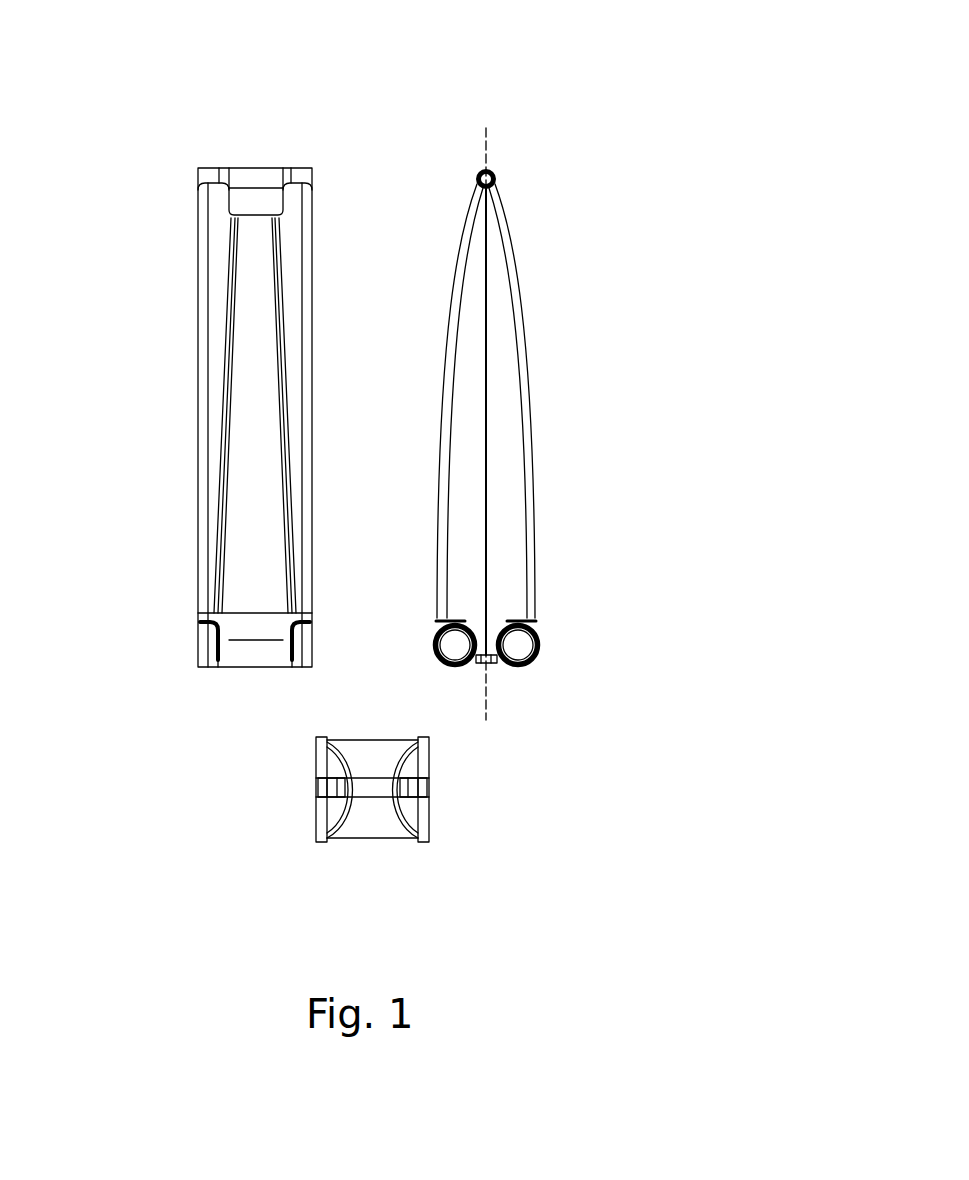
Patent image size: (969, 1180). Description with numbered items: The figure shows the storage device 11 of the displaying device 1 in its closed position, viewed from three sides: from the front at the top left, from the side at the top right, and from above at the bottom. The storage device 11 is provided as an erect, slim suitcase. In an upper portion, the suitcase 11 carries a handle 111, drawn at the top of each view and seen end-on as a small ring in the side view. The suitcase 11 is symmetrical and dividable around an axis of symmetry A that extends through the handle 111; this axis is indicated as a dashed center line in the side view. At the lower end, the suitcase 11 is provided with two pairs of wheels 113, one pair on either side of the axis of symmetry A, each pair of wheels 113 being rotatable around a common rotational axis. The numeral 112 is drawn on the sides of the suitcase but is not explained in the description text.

The displaying device 1 is at (213, 105).
The storage device 11 is at (200, 265).
The handle 111 is at (252, 170).
The arm strip 112 is at (255, 389).
The wheels 113 is at (198, 643).
The axis of symmetry A is at (486, 128).